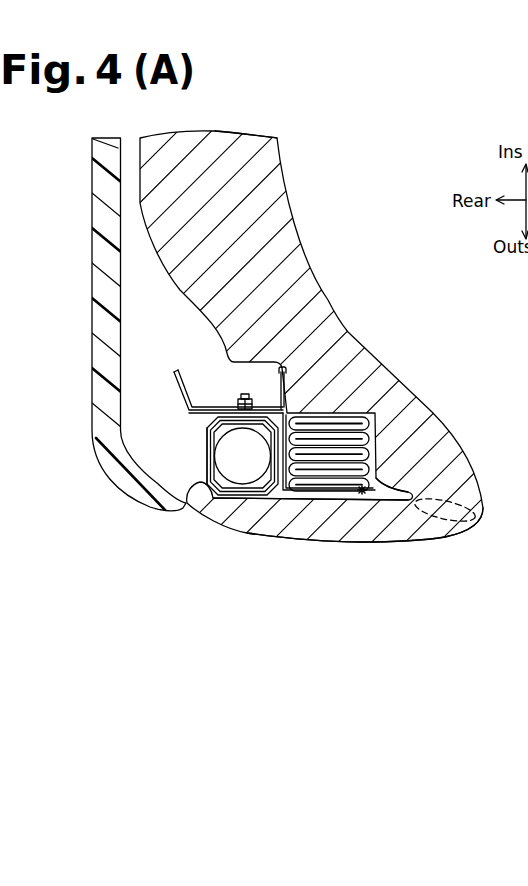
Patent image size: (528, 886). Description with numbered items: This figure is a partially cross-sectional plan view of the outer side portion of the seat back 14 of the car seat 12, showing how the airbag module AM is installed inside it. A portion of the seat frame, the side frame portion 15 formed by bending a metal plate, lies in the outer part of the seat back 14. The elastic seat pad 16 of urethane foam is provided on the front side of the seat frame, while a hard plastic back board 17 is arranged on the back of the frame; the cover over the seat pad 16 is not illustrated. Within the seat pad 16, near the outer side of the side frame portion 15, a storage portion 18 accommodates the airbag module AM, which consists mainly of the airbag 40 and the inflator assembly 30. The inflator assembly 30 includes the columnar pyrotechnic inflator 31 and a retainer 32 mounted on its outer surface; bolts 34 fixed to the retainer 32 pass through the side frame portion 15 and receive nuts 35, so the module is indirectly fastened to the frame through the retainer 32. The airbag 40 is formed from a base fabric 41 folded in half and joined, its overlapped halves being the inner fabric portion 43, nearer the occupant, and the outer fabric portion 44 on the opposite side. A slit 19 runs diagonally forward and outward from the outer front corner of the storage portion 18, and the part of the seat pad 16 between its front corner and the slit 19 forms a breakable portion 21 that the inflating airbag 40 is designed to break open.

The car seat 12 is at (264, 350).
The seat back 14 is at (330, 220).
The side frame portion 15 is at (181, 383).
The seat pad 16 is at (272, 157).
The back board 17 is at (123, 484).
The storage portion 18 is at (296, 534).
The slit 19 is at (401, 492).
The breakable portion 21 is at (432, 536).
The inflator assembly 30 is at (236, 512).
The inflator 31 is at (229, 474).
The retainer 32 is at (244, 496).
The bolts 34 is at (245, 393).
The nuts 35 is at (239, 407).
The airbag 40 is at (379, 473).
The base fabric 41 is at (325, 473).
The inner fabric portion 43 is at (288, 408).
The outer fabric portion 44 is at (339, 499).
The airbag module AM is at (203, 454).